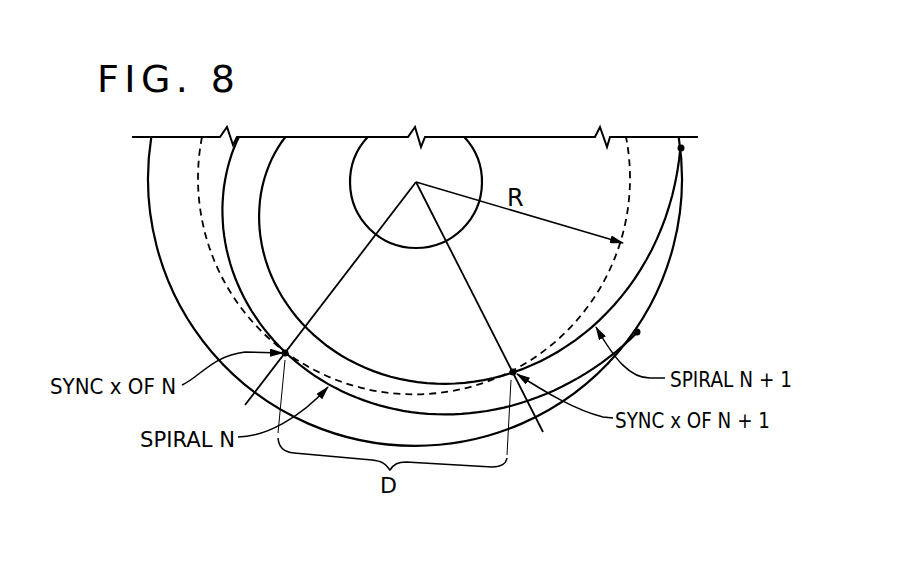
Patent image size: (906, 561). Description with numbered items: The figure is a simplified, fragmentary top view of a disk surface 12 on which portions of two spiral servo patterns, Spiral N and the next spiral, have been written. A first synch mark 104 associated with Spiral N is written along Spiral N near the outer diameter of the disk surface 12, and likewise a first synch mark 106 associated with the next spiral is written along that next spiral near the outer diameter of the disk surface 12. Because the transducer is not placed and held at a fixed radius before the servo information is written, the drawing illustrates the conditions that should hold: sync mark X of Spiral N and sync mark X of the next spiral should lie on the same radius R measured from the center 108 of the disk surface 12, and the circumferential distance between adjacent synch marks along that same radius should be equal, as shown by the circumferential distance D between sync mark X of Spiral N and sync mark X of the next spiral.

The disk surface 12 is at (316, 212).
The center of the disk 108 is at (416, 182).
The first synch mark associated with Spiral N+1 106 is at (681, 148).
The first synch mark associated with Spiral N 104 is at (637, 332).